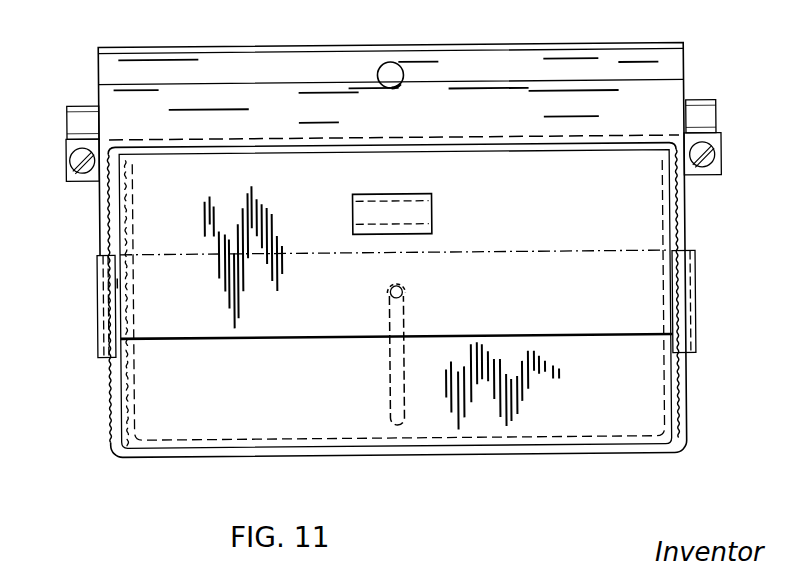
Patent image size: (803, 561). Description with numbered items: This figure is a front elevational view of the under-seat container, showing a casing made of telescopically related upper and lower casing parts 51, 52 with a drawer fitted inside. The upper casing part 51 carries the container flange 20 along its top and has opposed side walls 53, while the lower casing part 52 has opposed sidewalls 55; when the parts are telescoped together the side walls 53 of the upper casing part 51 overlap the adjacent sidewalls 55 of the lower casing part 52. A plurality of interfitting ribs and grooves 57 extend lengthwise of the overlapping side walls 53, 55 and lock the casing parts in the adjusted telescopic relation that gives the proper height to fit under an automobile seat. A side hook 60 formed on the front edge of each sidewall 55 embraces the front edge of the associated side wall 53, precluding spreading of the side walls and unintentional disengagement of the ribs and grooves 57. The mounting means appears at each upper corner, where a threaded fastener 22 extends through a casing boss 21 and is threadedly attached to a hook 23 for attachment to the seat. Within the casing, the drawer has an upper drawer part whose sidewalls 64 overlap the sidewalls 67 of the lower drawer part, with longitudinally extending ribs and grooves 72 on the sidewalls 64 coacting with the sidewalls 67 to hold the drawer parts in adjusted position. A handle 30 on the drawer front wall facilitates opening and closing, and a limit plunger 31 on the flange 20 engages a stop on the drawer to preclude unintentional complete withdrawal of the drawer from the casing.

The container flange 20 is at (465, 45).
The limit plunger 31 is at (388, 62).
The hook 23 is at (76, 103).
The casing boss 21 is at (67, 159).
The threaded fastener 22 is at (70, 167).
The upper casing part 51 is at (105, 223).
The side hook 60 is at (97, 298).
The interfitting ribs and grooves 57 is at (112, 279).
The lower casing part 52 is at (128, 391).
The handle 30 is at (433, 212).
The side walls 53 is at (688, 201).
The sidewalls 64 is at (670, 232).
The ribs and grooves 72 is at (670, 302).
The sidewalls 55 is at (679, 388).
The sidewalls 67 is at (667, 420).